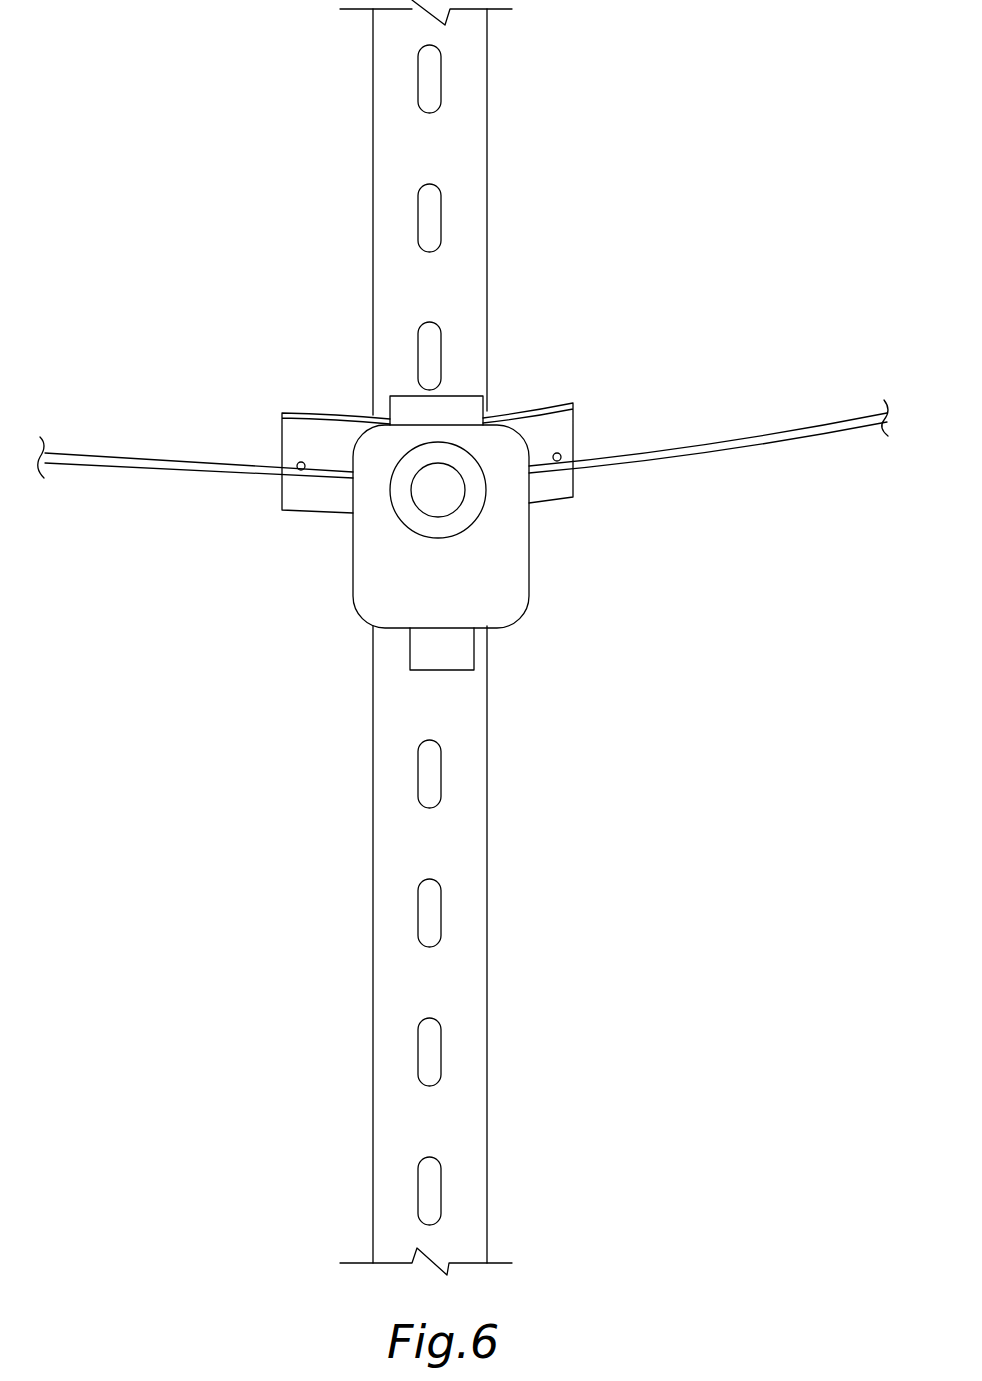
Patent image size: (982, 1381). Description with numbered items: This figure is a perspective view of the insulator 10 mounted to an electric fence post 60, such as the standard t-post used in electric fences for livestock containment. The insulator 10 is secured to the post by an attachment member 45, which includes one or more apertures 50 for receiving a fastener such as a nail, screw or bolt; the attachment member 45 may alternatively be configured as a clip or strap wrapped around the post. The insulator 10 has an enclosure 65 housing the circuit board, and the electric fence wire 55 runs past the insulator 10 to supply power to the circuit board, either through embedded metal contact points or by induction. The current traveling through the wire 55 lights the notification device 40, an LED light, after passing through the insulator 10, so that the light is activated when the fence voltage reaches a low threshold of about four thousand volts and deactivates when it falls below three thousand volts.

The insulator 10 is at (322, 383).
The notification device 40 is at (428, 499).
The attachment member 45 is at (547, 407).
The aperture 50 is at (298, 463).
The electric fence wire 55 is at (755, 440).
The electric fence post 60 is at (462, 163).
The enclosure 65 is at (500, 543).